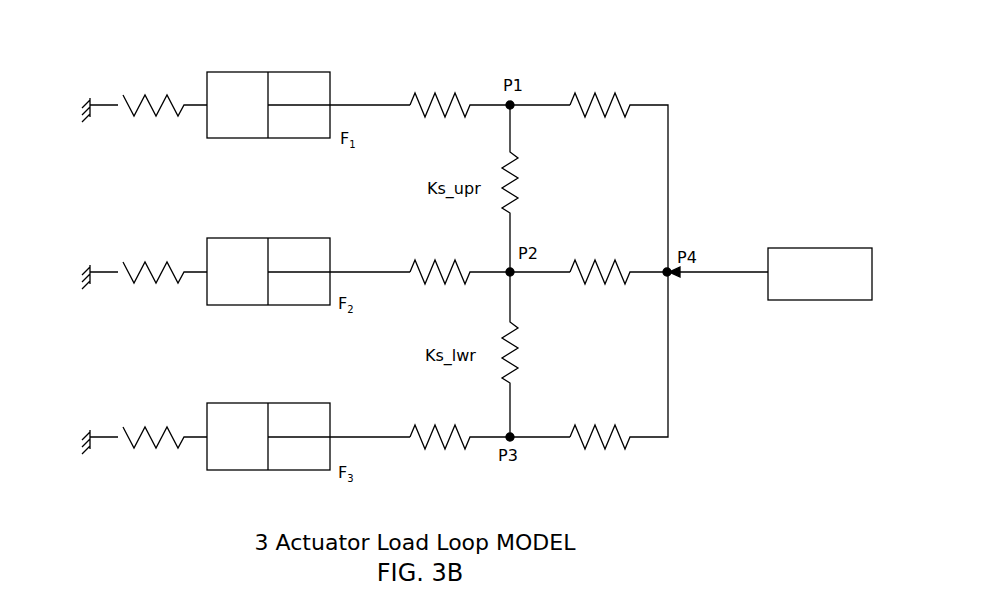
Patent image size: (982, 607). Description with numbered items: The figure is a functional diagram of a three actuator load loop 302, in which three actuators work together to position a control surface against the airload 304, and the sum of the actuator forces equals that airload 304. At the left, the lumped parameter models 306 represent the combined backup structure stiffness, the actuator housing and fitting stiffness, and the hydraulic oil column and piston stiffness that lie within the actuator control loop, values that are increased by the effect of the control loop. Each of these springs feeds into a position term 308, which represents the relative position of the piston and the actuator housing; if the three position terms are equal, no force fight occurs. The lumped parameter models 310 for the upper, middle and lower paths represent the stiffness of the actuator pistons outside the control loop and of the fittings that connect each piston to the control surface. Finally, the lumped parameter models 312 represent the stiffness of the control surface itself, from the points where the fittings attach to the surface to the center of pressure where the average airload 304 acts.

The three actuator load loop 302 is at (704, 76).
The airload 304 is at (818, 248).
The lumped parameter models 306 is at (98, 133).
The position terms 308 is at (235, 72).
The lumped parameter models 310 is at (443, 88).
The lumped parameter models 312 is at (607, 88).